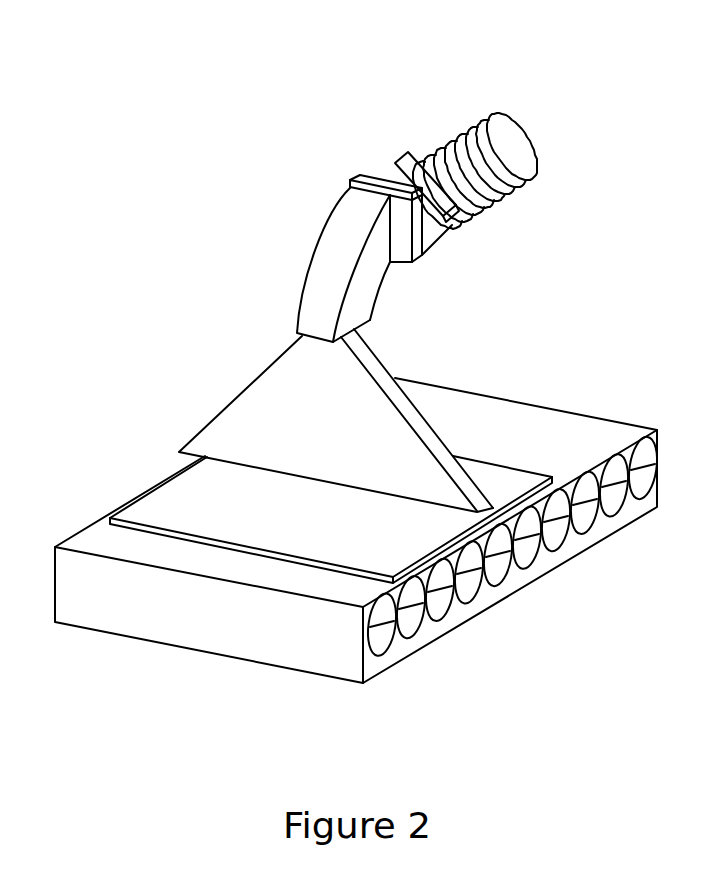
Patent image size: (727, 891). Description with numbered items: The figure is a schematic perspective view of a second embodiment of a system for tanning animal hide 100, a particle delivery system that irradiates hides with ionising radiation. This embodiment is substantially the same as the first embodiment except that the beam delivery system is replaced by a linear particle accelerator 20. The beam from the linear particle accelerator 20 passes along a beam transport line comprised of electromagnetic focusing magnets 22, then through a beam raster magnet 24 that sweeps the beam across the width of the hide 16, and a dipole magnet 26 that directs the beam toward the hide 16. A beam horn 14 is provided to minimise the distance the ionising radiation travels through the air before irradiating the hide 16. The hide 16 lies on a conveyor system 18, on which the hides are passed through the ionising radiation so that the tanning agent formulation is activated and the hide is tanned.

The system for tanning animal hide 100 is at (146, 64).
The beam horn 14 is at (233, 398).
The hide 16 is at (140, 510).
The conveyor system 18 is at (570, 427).
The linear particle accelerator 20 is at (500, 112).
The electromagnetic focusing magnets 22 is at (405, 163).
The beam raster magnet 24 is at (405, 249).
The dipole magnet 26 is at (314, 238).